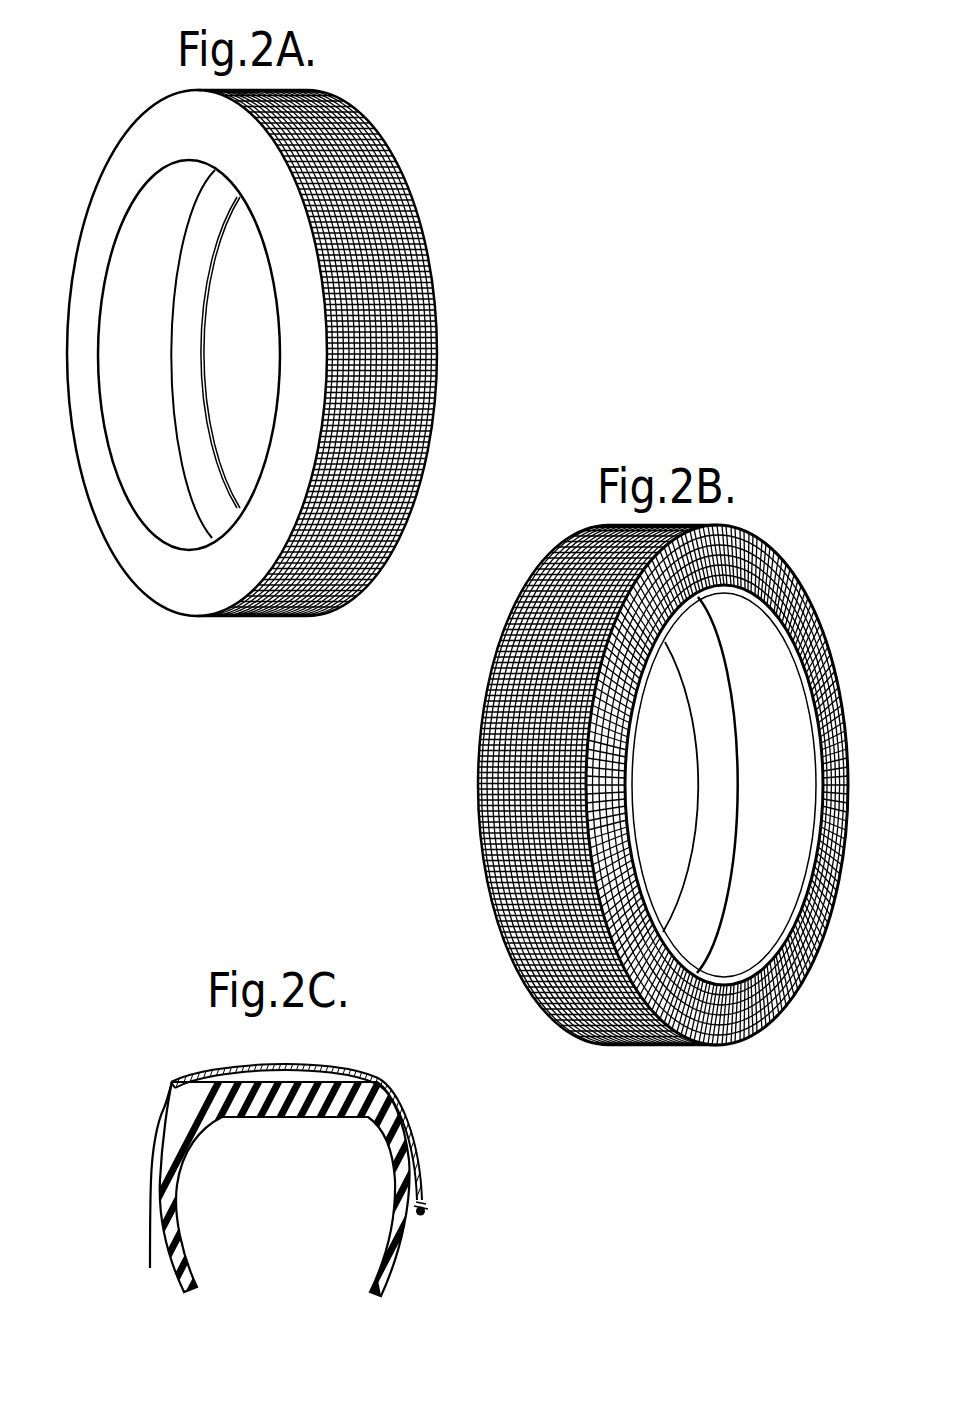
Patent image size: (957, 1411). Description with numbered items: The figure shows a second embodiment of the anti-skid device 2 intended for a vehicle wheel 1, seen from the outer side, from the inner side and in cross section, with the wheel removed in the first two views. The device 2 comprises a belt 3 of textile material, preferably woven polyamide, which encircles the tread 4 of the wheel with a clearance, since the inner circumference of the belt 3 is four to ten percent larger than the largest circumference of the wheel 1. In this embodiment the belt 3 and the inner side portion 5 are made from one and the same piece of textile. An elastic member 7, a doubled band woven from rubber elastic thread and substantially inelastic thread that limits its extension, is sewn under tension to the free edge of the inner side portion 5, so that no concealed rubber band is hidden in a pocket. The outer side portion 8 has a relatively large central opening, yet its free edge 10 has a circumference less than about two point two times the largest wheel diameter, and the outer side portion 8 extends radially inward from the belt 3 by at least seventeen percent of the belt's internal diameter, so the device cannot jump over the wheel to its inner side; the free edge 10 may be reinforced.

In FIG. 2C, the vehicle wheel 1 is at (398, 1257).
In FIG. 2A, the device 2 is at (365, 108).
In FIG. 2A, the belt 3 is at (393, 193).
In FIG. 2B, the belt 3 is at (557, 547).
In FIG. 2C, the belt 3 is at (353, 1067).
In FIG. 2C, the tread 4 is at (218, 1085).
In FIG. 2A, the inner side portion 5 is at (190, 333).
In FIG. 2B, the inner side portion 5 is at (833, 677).
In FIG. 2C, the inner side portion 5 is at (420, 1167).
In FIG. 2A, the elastic member 7 is at (207, 367).
In FIG. 2B, the elastic member 7 is at (818, 707).
In FIG. 2C, the elastic member 7 is at (428, 1218).
In FIG. 2A, the outer side portion 8 is at (88, 253).
In FIG. 2B, the outer side portion 8 is at (703, 765).
In FIG. 2C, the outer side portion 8 is at (157, 1123).
In FIG. 2A, the free edge 10 is at (108, 445).
In FIG. 2B, the free edge 10 is at (698, 800).
In FIG. 2C, the free edge 10 is at (150, 1268).